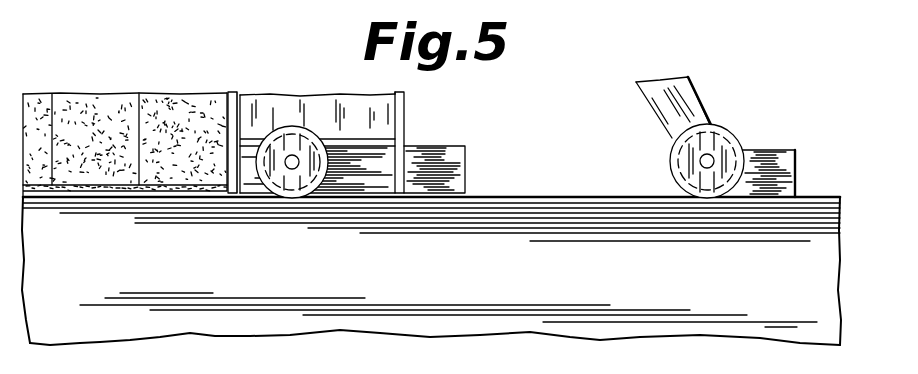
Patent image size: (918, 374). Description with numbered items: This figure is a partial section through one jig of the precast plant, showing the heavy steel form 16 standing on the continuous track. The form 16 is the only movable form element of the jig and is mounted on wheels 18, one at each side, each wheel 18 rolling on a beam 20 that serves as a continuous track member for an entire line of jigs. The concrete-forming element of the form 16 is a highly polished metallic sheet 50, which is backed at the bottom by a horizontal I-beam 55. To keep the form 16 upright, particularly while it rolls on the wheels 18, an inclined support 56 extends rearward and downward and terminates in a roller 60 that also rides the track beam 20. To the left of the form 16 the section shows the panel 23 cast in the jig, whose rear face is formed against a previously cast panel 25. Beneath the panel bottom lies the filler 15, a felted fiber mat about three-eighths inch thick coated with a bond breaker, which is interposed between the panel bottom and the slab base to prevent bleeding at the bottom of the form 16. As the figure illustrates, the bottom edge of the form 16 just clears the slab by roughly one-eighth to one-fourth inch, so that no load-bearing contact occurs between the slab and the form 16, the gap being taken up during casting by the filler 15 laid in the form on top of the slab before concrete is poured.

The filler 15 is at (97, 187).
The form 16 is at (402, 110).
The wheels 18 is at (282, 187).
The beam 20 is at (518, 282).
The panel 23 is at (150, 105).
The previously cast panel 25 is at (70, 108).
The polished sheet 50 is at (227, 107).
The horizontal I-beam 55 is at (402, 137).
The inclined support 56 is at (683, 93).
The roller 60 is at (707, 188).